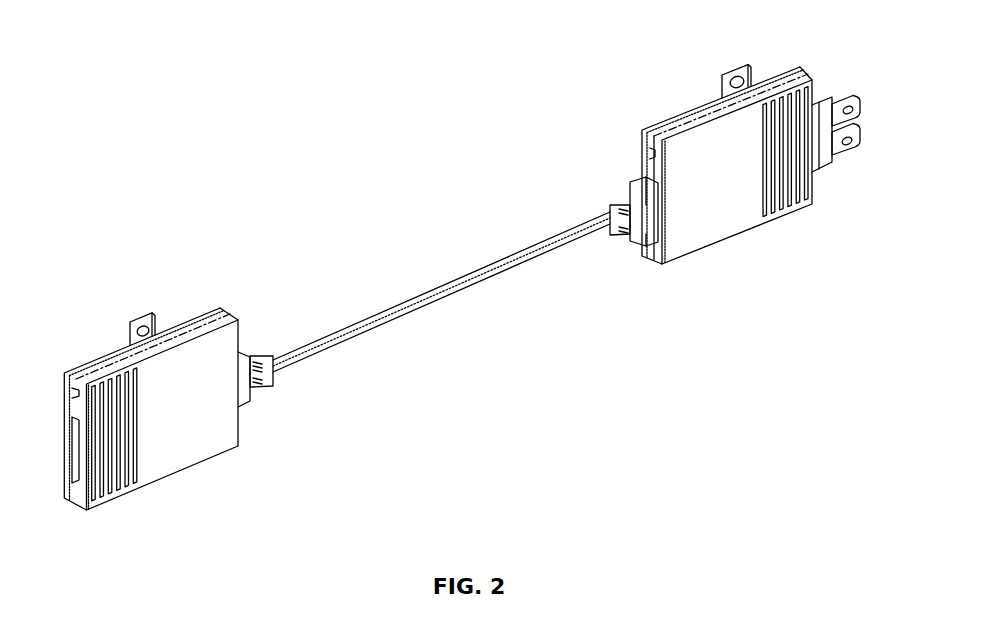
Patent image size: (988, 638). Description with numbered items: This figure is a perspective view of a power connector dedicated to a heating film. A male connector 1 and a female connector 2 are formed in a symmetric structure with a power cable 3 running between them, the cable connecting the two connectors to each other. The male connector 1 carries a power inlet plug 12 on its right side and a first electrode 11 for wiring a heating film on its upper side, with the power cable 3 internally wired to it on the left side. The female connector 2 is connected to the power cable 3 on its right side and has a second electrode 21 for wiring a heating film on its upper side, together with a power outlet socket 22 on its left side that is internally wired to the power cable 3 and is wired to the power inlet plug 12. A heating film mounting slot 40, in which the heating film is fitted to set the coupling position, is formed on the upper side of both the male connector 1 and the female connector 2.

The male connector 1 is at (731, 234).
The female connector 2 is at (198, 456).
The power cable 3 is at (452, 298).
The first electrode 11 is at (740, 65).
The power inlet plug 12 is at (862, 108).
The second electrode 21 is at (143, 316).
The power outlet socket 22 is at (72, 438).
The heating film mounting slot 40 is at (692, 115).